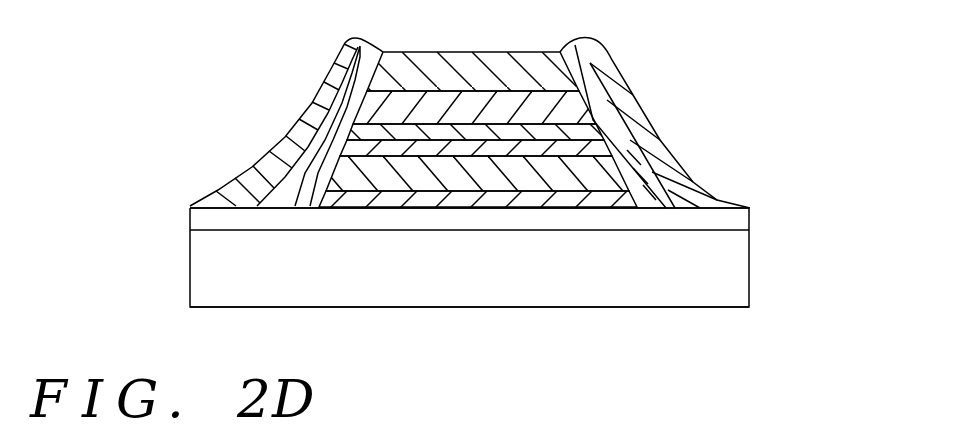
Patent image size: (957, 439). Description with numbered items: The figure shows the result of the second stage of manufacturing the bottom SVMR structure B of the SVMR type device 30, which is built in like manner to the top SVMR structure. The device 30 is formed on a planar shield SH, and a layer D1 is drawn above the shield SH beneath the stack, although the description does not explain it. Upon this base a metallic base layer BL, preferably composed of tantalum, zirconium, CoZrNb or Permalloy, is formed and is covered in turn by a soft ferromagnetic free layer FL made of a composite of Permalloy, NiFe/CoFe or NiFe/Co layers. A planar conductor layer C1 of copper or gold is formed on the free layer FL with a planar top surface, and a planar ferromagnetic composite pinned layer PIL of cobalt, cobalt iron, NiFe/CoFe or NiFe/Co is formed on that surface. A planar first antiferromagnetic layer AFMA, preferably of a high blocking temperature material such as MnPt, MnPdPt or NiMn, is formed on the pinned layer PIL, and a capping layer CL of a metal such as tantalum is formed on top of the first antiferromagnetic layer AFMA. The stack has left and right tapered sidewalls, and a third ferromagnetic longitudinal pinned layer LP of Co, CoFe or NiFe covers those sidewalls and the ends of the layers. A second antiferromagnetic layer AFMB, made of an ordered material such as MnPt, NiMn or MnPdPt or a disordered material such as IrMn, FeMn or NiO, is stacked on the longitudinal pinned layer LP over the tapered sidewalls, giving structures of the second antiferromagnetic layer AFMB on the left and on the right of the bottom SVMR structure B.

The capping layer CL is at (428, 73).
The free layer FL is at (507, 96).
The conductor layer C1 is at (372, 136).
The pinned layer PIL is at (582, 147).
The first antiferromagnetic layer AFMA is at (358, 168).
The longitudinal pinned layer LP is at (760, 173).
The second antiferromagnetic layer AFMB is at (320, 102).
The dielectric gap layer D1 is at (212, 217).
The shield SH is at (733, 275).
The base layer BL is at (513, 193).
The bottom SVMR structure B is at (265, 50).
The SVMR type device 30 is at (233, 340).